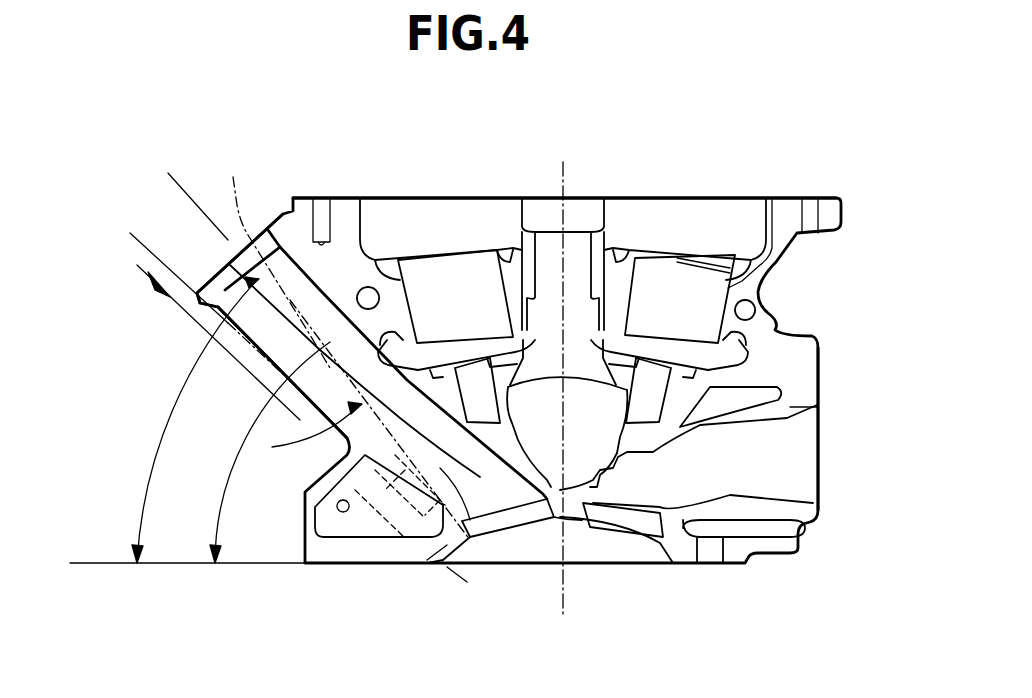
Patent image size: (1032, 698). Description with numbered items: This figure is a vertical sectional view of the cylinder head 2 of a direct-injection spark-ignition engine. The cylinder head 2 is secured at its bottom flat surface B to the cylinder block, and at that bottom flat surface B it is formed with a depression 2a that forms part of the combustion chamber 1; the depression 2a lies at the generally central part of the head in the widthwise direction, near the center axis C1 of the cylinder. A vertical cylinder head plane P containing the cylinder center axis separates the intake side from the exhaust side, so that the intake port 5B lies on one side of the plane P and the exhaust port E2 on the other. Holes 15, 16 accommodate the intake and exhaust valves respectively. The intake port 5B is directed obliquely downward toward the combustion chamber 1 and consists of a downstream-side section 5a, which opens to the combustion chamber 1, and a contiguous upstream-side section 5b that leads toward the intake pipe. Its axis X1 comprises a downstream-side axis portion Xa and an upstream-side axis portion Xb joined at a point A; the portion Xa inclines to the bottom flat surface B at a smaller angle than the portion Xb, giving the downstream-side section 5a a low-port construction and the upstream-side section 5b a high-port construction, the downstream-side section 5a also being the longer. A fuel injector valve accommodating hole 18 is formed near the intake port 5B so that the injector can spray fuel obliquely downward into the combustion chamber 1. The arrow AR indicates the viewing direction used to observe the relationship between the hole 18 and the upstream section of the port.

The combustion chamber 1 is at (519, 380).
The cylinder head 2 is at (784, 198).
The depression 2a is at (588, 560).
The second intake port 5B is at (333, 317).
The upstream-side section 5b is at (288, 278).
The downstream-side section 5a is at (480, 565).
The intake valve accommodating hole 15 is at (465, 262).
The exhaust valve accommodating hole 16 is at (686, 285).
The fuel injector valve accommodating hole 18 is at (343, 503).
The bottom flat surface B is at (378, 565).
The vertical cylinder head plane P is at (438, 565).
The center axis C1 is at (563, 593).
The exhaust port E2 is at (800, 455).
The axis of the intake port X1 is at (249, 259).
The downstream-side axis portion Xa is at (367, 420).
The upstream-side axis portion Xb is at (215, 328).
The arrow AR is at (195, 334).
The point A is at (303, 368).